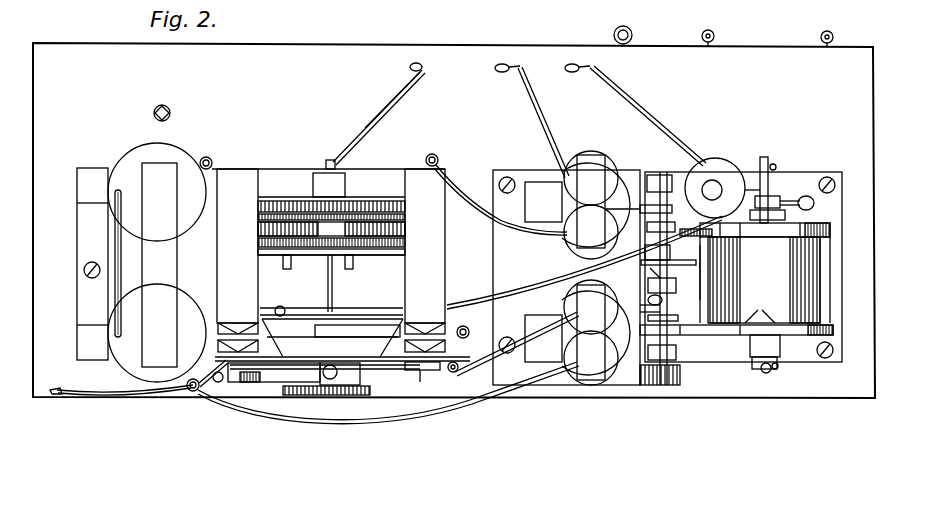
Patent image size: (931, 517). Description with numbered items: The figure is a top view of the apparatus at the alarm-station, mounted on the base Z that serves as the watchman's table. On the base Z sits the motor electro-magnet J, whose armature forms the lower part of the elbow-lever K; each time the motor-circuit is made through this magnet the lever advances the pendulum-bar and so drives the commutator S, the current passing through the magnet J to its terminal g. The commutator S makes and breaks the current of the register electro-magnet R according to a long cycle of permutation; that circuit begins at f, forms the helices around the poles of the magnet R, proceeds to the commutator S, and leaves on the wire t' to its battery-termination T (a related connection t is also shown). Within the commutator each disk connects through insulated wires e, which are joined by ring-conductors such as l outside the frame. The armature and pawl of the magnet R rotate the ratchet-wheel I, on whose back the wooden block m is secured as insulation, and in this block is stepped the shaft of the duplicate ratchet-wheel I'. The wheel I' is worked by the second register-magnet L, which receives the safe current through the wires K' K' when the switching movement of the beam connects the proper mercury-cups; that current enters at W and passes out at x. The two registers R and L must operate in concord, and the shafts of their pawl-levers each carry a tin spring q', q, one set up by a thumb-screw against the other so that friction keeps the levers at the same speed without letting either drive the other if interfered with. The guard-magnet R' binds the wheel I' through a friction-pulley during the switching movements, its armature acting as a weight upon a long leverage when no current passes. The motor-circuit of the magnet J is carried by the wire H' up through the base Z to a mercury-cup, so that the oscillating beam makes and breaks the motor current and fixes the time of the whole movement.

The motor electro-magnet J is at (141, 262).
The terminal g is at (212, 161).
The base Z is at (341, 241).
The commutator S is at (331, 228).
The wire H' is at (473, 332).
The outlet terminal x is at (447, 372).
The elbow-lever K is at (517, 346).
The wires K' is at (388, 393).
The inlet terminal W is at (139, 379).
The battery-termination T is at (386, 114).
The wire t' is at (392, 100).
The circuit terminal f is at (532, 114).
The register electro-magnet R is at (577, 205).
The register-magnet L is at (577, 332).
The tin spring q' is at (662, 255).
The arm q is at (653, 280).
The ring-conductor l is at (660, 383).
The guard-magnet R' is at (722, 188).
The insulated wire e is at (782, 190).
The ratchet-wheel I is at (765, 229).
The wooden block m is at (765, 280).
The rod t is at (709, 272).
The duplicate ratchet-wheel I' is at (736, 322).